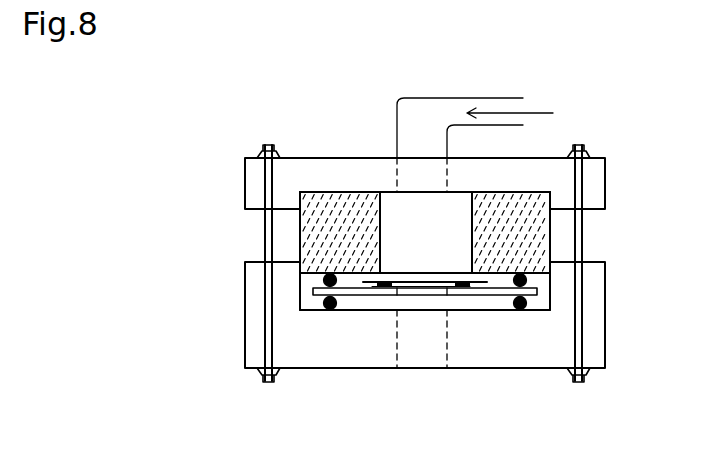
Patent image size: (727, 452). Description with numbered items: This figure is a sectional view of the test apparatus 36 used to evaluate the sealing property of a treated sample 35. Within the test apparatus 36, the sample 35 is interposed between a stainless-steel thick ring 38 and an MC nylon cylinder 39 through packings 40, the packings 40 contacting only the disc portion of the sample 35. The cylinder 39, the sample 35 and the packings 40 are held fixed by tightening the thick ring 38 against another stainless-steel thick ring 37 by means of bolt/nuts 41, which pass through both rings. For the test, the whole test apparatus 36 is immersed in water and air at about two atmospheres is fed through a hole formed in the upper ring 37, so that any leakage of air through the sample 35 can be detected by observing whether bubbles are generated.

The sample 35 is at (471, 298).
The test apparatus 36 is at (381, 257).
The SUS-made thick ring 37 is at (597, 183).
The SUS-made thick ring 38 is at (253, 330).
The MC nylon-made cylinder 39 is at (538, 234).
The packings 40 is at (338, 306).
The bolt/nuts 41 is at (587, 377).